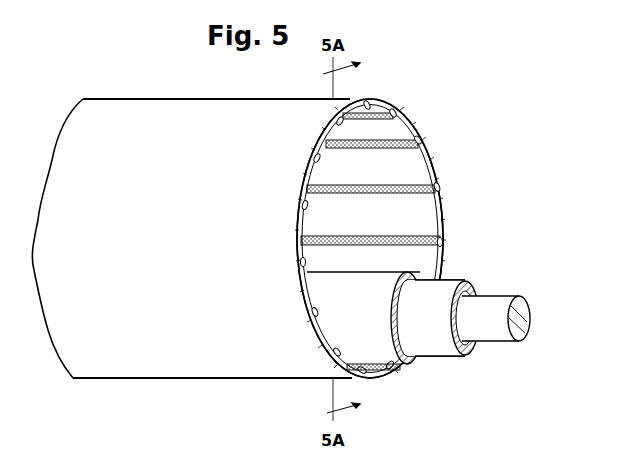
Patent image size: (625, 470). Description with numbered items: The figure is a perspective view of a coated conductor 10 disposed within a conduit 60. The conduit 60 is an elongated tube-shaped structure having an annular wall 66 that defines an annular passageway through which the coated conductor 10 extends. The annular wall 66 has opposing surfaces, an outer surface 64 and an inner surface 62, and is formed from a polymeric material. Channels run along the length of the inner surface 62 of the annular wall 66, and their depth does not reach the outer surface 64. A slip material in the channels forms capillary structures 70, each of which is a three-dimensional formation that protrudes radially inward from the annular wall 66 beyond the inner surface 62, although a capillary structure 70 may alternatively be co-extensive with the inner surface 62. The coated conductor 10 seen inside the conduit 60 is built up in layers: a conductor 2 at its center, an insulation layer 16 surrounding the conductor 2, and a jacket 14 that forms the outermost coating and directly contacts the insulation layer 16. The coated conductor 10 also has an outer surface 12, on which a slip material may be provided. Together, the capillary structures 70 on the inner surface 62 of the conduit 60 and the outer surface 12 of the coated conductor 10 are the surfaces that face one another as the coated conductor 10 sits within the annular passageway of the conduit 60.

The conductor 2 is at (493, 325).
The coated conductor 10 is at (408, 364).
The outer surface 12 is at (380, 350).
The jacket 14 is at (372, 325).
The insulation layer 16 is at (435, 325).
The conduit 60 is at (200, 246).
The inner surface 62 is at (366, 104).
The outer surface 64 is at (413, 167).
The annular wall 66 is at (405, 118).
The capillary structure 70 is at (400, 150).